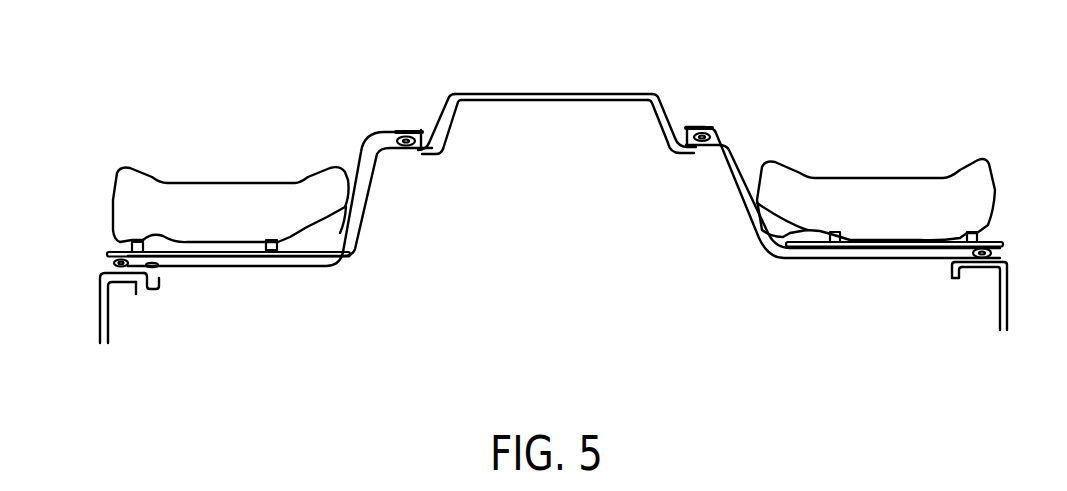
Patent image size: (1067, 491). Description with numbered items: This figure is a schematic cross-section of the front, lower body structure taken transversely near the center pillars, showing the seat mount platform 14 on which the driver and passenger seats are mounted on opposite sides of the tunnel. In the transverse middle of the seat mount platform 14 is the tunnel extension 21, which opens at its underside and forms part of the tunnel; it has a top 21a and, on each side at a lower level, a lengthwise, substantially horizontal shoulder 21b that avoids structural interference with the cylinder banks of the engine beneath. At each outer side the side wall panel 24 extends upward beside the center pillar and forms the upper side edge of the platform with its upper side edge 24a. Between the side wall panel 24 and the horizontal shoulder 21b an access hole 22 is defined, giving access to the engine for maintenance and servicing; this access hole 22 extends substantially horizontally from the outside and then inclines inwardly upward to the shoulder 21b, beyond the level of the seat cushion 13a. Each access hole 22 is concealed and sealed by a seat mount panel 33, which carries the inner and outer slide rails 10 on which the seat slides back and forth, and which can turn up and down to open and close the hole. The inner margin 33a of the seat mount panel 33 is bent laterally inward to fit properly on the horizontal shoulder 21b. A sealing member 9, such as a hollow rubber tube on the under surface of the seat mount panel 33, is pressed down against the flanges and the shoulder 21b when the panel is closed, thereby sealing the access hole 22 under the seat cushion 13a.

The sealing member 9 is at (407, 147).
The slide rails 10 is at (130, 245).
The seat cushion 13a is at (230, 180).
The seat mount platform 14 is at (91, 288).
The tunnel extension 21 is at (557, 86).
The top 21a is at (608, 93).
The horizontal shoulder 21b is at (433, 143).
The access hole 22 is at (160, 290).
The side wall panel 24 is at (98, 328).
The upper side edge 24a is at (157, 266).
The seat mount panel 33 is at (364, 142).
The inner margin 33a is at (421, 132).